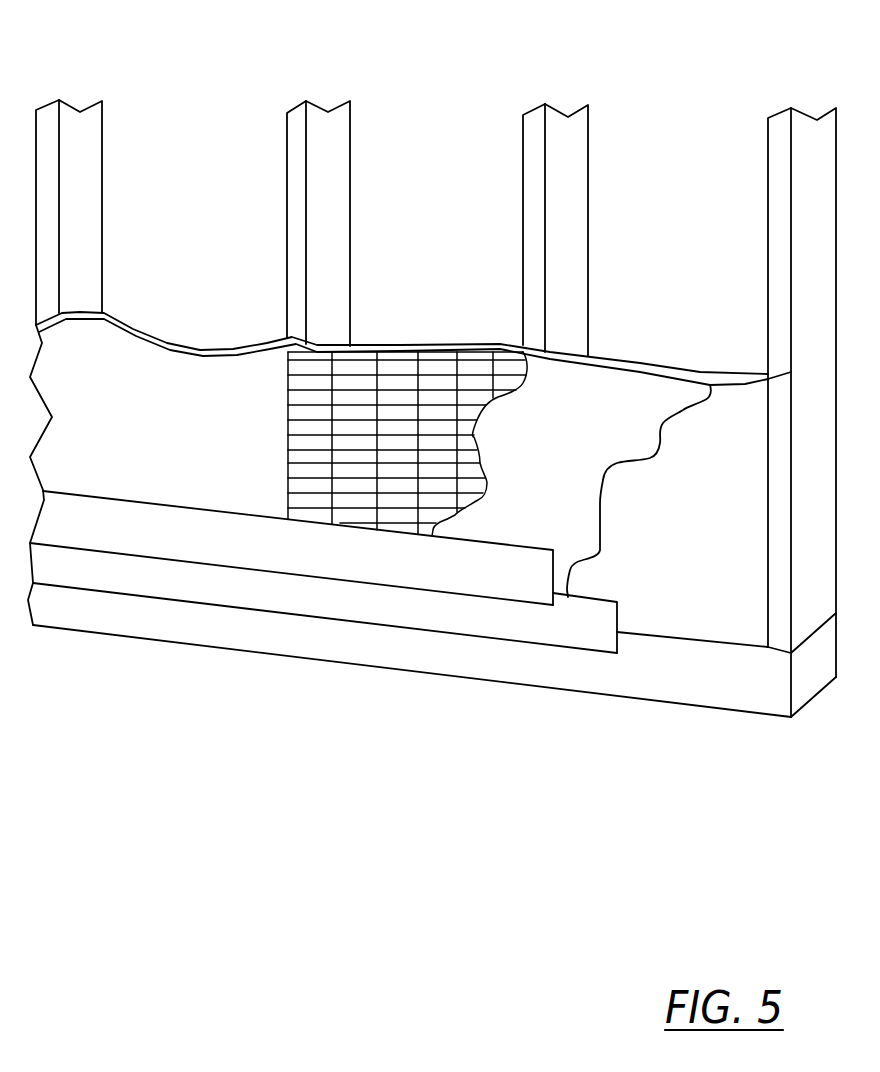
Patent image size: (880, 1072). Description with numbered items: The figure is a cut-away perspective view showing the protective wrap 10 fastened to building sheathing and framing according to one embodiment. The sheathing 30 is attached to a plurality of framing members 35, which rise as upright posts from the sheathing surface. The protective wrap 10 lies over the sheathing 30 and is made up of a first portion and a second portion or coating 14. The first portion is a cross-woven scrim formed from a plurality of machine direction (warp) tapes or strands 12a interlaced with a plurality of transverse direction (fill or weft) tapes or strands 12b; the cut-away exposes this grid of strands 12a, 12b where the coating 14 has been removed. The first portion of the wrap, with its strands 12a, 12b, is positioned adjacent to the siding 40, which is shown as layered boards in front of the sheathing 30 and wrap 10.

The protective wrap 10 is at (491, 337).
The machine direction tapes or strands 12a is at (397, 375).
The transverse direction tapes or strands 12b is at (457, 365).
The second portion or coating 14 is at (537, 472).
The sheathing 30 is at (675, 539).
The framing member 35 is at (88, 99).
The siding 40 is at (167, 545).